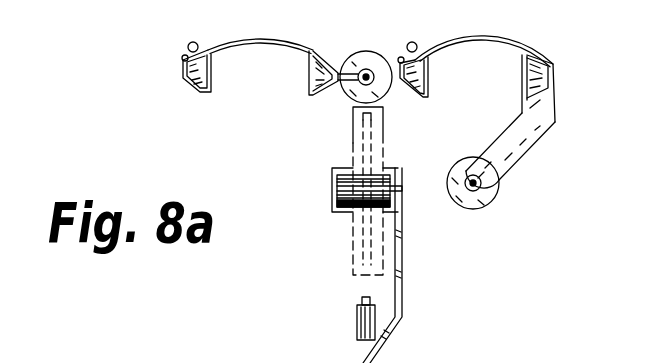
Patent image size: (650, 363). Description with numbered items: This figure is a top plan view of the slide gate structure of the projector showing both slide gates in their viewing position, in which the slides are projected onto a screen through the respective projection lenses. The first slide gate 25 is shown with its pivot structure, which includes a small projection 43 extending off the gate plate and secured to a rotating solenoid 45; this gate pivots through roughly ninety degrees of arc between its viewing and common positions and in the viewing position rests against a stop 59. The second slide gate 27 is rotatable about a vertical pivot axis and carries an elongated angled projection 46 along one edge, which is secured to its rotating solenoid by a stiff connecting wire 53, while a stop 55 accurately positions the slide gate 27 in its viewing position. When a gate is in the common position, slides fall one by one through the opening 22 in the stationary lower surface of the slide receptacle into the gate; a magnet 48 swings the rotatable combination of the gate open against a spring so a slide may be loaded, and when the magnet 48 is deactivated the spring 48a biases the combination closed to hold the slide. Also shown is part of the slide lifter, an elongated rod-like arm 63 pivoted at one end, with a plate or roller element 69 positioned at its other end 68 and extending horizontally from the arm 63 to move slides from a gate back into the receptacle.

The opening 22 is at (375, 127).
The slide gate 25 is at (277, 33).
The slide gate 27 is at (470, 35).
The projection 43 is at (338, 72).
The rotating solenoid 45 is at (378, 60).
The elongated angled projection 46 is at (507, 160).
The magnet 48 is at (357, 320).
The spring 48a is at (186, 70).
The connecting wire 53 is at (486, 203).
The stop 55 is at (412, 42).
The stop 59 is at (193, 42).
The arm 63 is at (403, 257).
The end of arm 68 is at (403, 190).
The roller element 69 is at (340, 188).